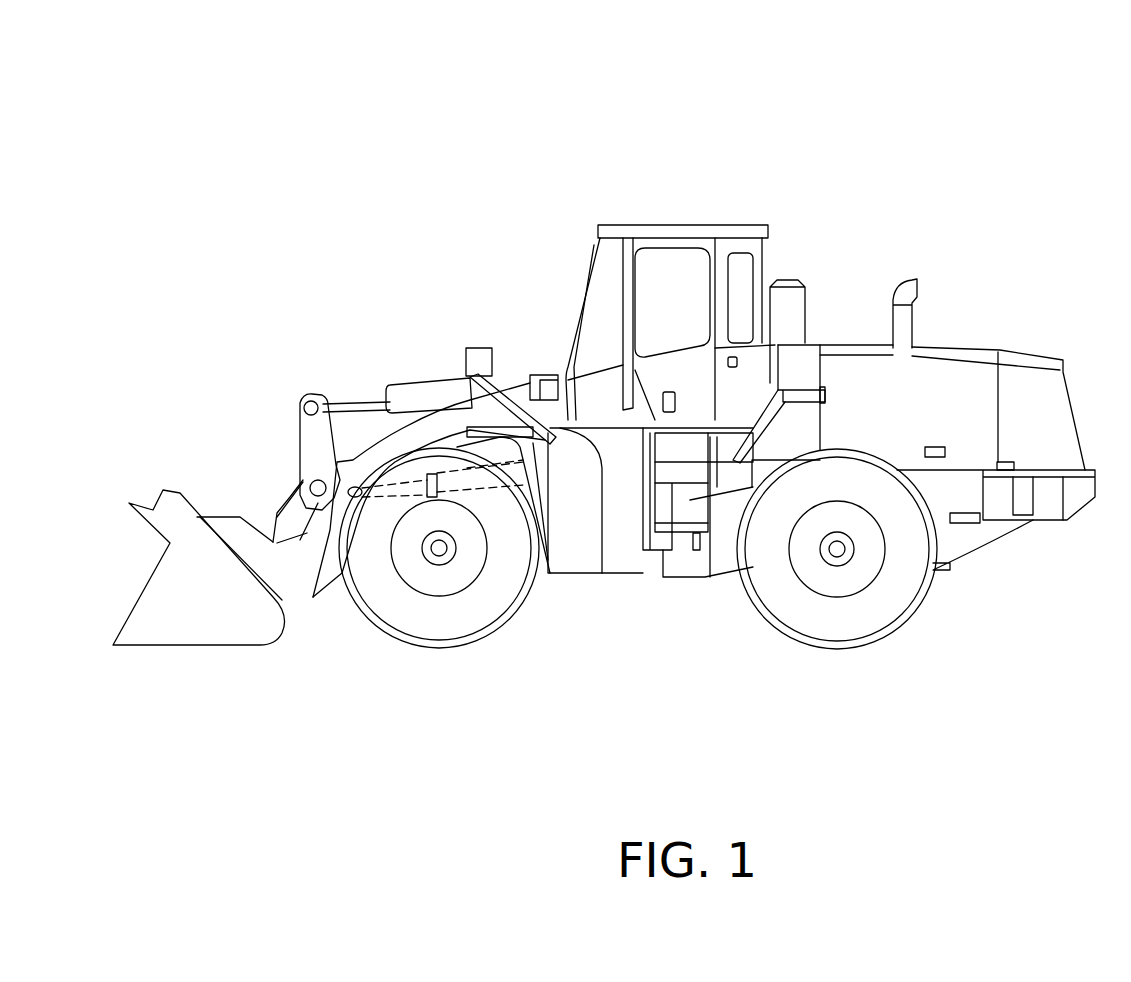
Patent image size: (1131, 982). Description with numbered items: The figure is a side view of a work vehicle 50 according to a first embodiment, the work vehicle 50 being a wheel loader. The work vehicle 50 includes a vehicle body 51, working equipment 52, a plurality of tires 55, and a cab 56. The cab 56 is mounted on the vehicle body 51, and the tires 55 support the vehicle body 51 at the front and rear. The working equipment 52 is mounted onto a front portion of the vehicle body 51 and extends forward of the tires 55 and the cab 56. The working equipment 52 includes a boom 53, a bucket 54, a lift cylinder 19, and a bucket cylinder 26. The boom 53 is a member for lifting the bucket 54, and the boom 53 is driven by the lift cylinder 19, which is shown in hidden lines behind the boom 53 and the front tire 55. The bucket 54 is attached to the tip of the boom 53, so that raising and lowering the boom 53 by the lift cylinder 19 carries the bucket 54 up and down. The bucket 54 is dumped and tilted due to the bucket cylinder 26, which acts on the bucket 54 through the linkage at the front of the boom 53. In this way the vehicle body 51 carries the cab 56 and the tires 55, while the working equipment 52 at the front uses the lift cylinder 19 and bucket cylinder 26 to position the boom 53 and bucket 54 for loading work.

The work vehicle 50 is at (1010, 111).
The vehicle body 51 is at (847, 299).
The working equipment 52 is at (214, 366).
The boom 53 is at (386, 450).
The bucket 54 is at (153, 507).
The tires 55 is at (447, 628).
The cab 56 is at (693, 213).
The bucket cylinder 26 is at (340, 400).
The lift cylinder 19 is at (432, 458).